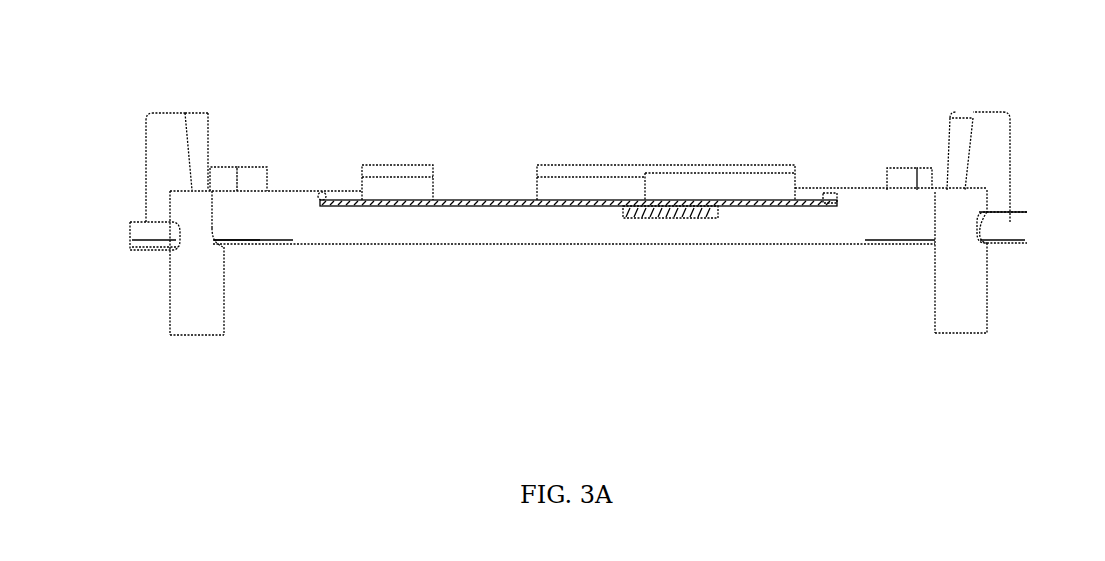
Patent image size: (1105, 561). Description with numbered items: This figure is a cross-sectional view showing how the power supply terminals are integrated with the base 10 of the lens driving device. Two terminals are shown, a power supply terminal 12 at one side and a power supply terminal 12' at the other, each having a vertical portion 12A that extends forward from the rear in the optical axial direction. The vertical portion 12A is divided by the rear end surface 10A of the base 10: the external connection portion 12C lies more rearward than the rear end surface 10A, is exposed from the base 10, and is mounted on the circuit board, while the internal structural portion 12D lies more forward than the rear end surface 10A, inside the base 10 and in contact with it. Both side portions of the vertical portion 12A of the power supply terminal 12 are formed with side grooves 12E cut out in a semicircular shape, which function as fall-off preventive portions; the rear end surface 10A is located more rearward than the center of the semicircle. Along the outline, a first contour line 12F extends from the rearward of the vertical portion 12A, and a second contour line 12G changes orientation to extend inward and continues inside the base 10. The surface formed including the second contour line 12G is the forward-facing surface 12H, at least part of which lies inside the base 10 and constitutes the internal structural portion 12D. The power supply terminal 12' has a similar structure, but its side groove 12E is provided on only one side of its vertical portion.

The base 10 is at (542, 230).
The rear end surface 10A is at (268, 242).
The power supply terminal 12 is at (145, 167).
The power supply terminal 12' is at (946, 130).
The vertical portion 12A is at (180, 287).
The external connection portion 12C is at (188, 323).
The internal structural portion 12D is at (177, 207).
The side groove 12E is at (215, 227).
The first contour line 12F is at (224, 323).
The second contour line 12G is at (218, 247).
The forward-facing surface 12H is at (223, 247).